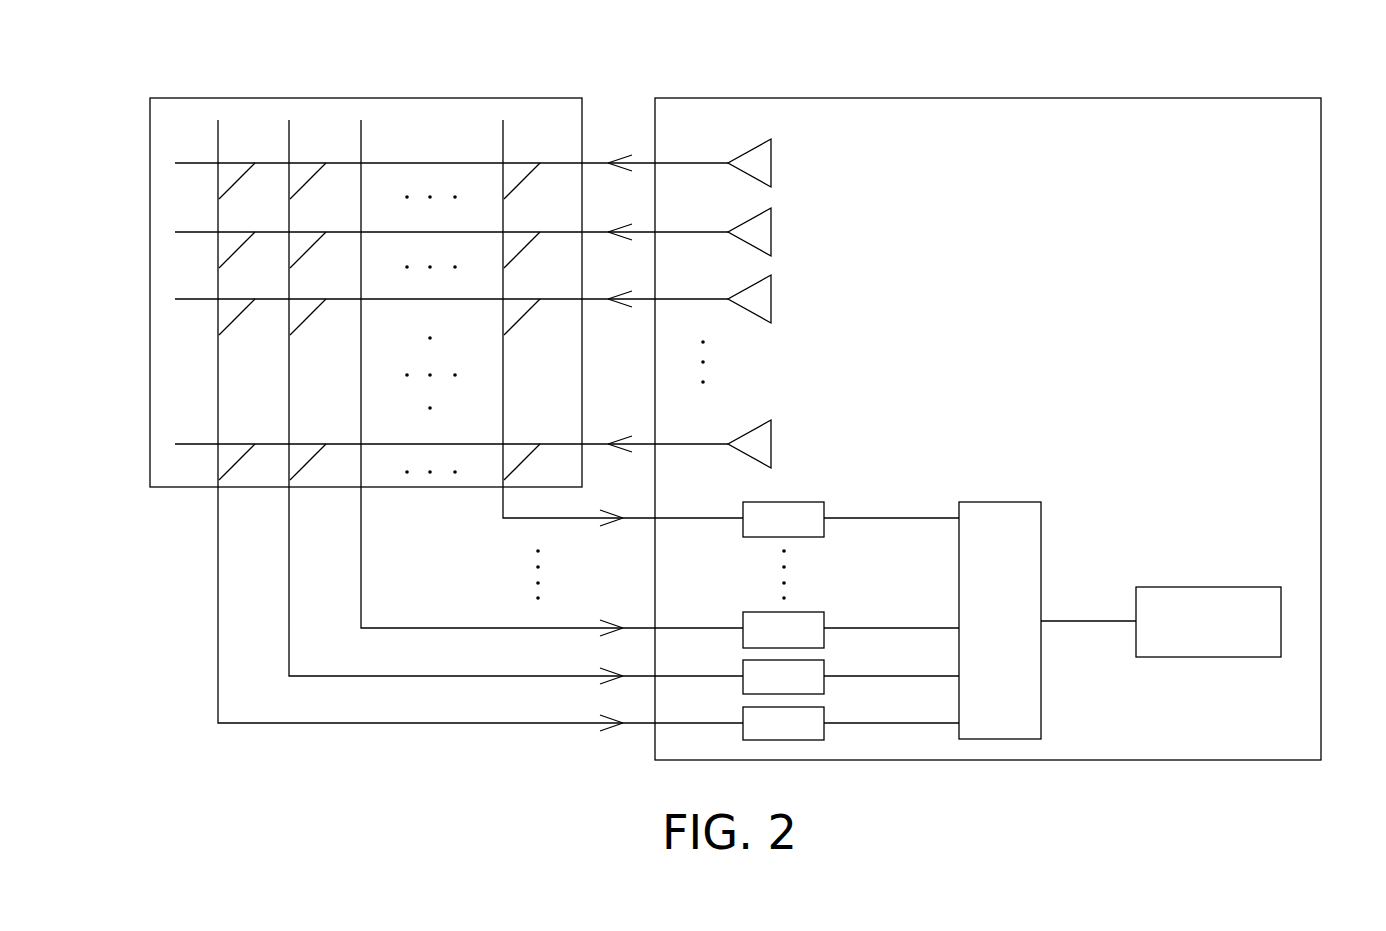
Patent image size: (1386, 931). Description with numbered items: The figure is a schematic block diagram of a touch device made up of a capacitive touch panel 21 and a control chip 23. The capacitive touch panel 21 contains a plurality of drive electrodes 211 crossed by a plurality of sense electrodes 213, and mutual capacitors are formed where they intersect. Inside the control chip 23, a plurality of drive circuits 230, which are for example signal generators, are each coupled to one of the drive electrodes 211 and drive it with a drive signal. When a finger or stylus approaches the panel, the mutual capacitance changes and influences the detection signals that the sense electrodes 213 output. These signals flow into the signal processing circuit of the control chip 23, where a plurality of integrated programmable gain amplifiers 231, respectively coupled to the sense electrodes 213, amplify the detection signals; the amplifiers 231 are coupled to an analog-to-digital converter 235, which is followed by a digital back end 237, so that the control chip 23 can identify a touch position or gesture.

The capacitive touch panel 21 is at (150, 182).
The drive electrodes 211 is at (532, 163).
The sense electrodes 213 is at (218, 365).
The control chip 23 is at (1100, 97).
The drive circuits 230 is at (818, 444).
The integrated programmable gain amplifiers (IPGAs) 231 is at (810, 740).
The analog-to-digital converter (ADC) 235 is at (998, 740).
The digital back end 237 is at (1281, 612).